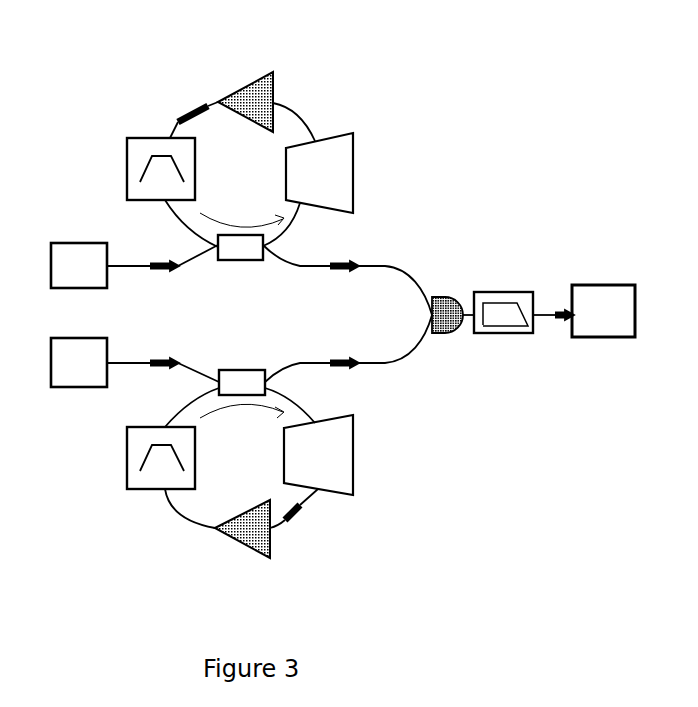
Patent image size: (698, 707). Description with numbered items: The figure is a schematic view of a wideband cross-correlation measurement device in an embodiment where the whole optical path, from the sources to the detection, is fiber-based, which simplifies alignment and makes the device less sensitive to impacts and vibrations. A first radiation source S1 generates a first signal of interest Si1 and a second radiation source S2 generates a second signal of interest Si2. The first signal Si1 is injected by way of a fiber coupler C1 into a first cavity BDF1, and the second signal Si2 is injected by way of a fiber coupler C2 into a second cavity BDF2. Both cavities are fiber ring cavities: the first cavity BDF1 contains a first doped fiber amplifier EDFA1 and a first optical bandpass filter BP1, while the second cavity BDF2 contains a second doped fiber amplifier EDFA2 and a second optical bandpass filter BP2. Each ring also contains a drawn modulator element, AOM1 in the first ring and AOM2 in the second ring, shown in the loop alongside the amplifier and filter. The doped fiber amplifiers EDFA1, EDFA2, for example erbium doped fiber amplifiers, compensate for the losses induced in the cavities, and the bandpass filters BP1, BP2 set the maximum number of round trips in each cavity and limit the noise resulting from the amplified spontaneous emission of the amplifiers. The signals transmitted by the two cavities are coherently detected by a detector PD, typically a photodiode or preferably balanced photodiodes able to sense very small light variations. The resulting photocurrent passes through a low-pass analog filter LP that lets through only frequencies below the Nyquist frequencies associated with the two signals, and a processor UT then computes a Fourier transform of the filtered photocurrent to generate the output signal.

The first optical bandpass filter BP1 is at (122, 144).
The first doped fiber amplifier EDFA1 is at (240, 87).
The first cavity BDF1 is at (307, 93).
The acousto-optic modulator 1 AOM1 is at (354, 175).
The fiber coupler C1 is at (237, 261).
The first radiation source S1 is at (80, 242).
The first signal of interest Si1 is at (138, 265).
The detector PD is at (446, 297).
The low-pass analog filter LP is at (510, 291).
The processor UT is at (600, 284).
The second radiation source S2 is at (52, 360).
The second signal of interest Si2 is at (137, 362).
The fiber coupler C2 is at (245, 369).
The second optical bandpass filter BP2 is at (127, 458).
The acousto-optic modulator 2 AOM2 is at (354, 452).
The second doped fiber amplifier EDFA2 is at (243, 545).
The second cavity BDF2 is at (310, 528).